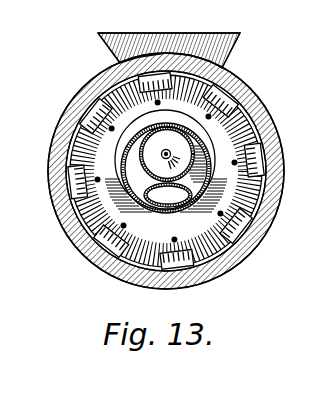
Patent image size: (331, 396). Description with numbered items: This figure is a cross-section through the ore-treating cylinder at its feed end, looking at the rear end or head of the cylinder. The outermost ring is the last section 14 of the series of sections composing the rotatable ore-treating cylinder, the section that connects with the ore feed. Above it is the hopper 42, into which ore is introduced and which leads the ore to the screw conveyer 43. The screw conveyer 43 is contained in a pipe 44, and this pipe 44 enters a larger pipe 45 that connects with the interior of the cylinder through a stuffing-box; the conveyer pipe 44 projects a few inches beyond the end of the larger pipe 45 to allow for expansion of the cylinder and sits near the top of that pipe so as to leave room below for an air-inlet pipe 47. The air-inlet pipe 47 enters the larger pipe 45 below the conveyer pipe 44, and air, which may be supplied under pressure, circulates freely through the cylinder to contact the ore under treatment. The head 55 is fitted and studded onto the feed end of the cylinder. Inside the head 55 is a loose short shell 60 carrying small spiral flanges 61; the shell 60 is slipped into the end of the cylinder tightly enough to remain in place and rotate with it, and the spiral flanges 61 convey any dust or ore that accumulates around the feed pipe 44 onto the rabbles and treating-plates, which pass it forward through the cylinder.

The last section 14 is at (92, 252).
The hopper 42 is at (173, 41).
The screw conveyer 43 is at (172, 148).
The pipe 44 is at (190, 151).
The larger pipe 45 is at (163, 156).
The air-inlet pipe 47 is at (157, 204).
The head 55 is at (208, 137).
The loose short shell 60 is at (260, 121).
The spiral flanges 61 is at (236, 96).